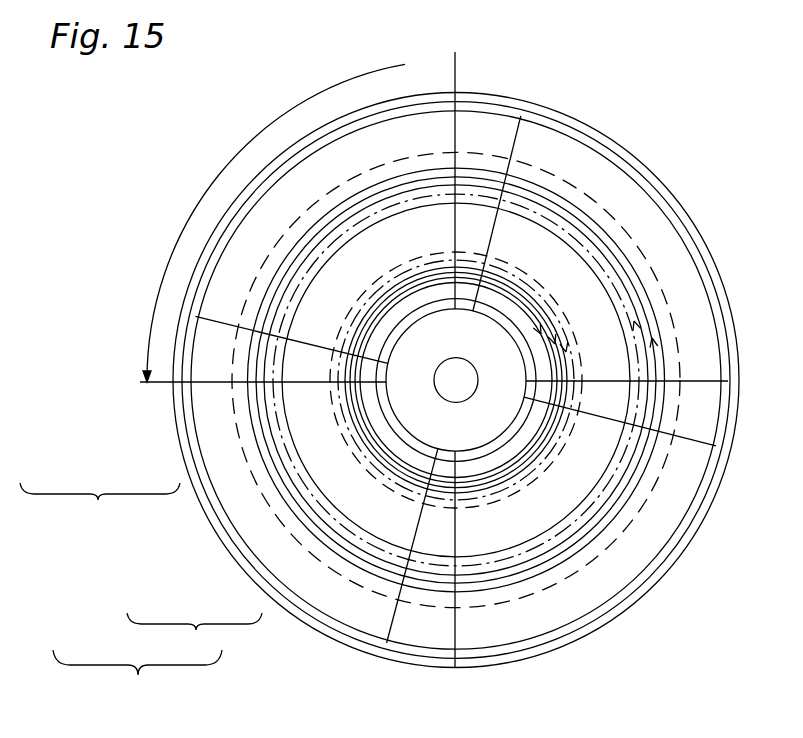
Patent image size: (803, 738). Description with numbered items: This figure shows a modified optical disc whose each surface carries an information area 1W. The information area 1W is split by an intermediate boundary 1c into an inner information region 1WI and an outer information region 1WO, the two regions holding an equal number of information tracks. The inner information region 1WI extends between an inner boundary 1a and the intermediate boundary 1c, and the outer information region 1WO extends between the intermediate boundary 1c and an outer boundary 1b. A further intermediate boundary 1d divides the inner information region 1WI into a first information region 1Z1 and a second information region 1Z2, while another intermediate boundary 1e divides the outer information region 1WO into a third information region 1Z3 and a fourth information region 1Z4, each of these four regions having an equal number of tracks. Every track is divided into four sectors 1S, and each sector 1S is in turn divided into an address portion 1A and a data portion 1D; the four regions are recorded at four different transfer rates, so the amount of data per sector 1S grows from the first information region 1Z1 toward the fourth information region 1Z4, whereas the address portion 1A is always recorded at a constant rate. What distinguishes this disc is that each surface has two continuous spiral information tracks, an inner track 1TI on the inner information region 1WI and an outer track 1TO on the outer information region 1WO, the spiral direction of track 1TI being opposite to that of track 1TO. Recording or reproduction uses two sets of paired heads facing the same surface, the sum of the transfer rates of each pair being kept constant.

The inner boundary 1a is at (387, 337).
The outer boundary 1b is at (233, 243).
The intermediate boundary 1c is at (311, 287).
The intermediate boundary 1d is at (387, 278).
The intermediate boundary 1e is at (338, 194).
The sector 1S is at (274, 223).
The address portion 1A is at (467, 290).
The data portion 1D is at (530, 330).
The information track 1TO is at (588, 537).
The information track 1TI is at (500, 488).
The first information region 1Z1 is at (343, 425).
The second information region 1Z2 is at (298, 430).
The third information region 1Z3 is at (240, 423).
The fourth information region 1Z4 is at (205, 410).
The outer information region 1WO is at (100, 512).
The inner information region 1WI is at (194, 641).
The information area 1W is at (137, 680).